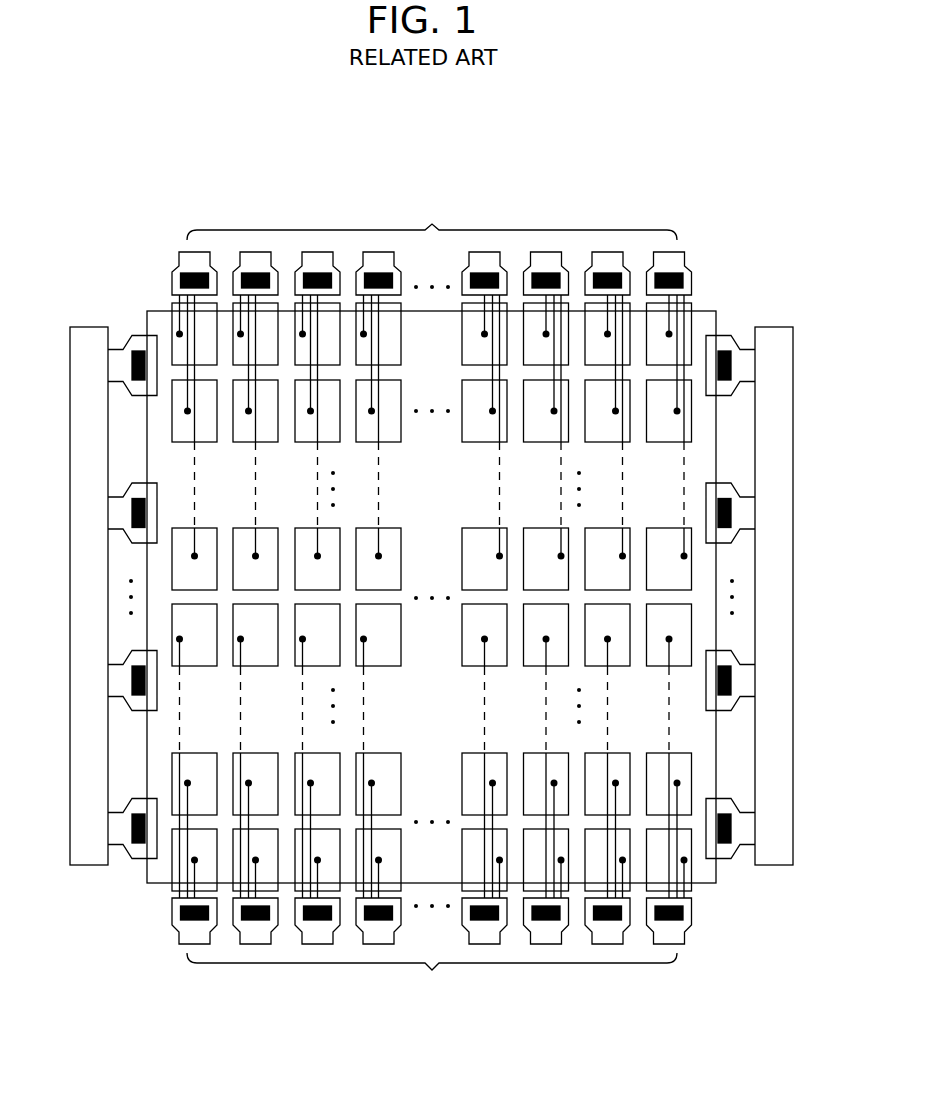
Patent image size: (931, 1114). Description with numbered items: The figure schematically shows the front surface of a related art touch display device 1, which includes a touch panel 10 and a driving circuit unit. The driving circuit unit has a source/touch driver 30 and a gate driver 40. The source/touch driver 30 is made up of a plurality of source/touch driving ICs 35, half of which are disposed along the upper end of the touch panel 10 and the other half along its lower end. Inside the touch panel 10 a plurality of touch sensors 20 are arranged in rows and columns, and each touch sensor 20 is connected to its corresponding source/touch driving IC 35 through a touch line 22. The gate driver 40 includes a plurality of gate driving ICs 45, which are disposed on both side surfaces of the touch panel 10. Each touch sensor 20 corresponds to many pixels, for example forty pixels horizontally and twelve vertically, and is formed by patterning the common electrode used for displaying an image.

The touch display device 1 is at (421, 147).
The touch panel 10 is at (708, 309).
The touch sensor 20 is at (532, 443).
The touch line 22 is at (562, 433).
The source/touch driver 30 is at (432, 596).
The source/touch driving IC 35 is at (172, 271).
The gate driver 40 is at (80, 326).
The gate driving IC 45 is at (120, 360).